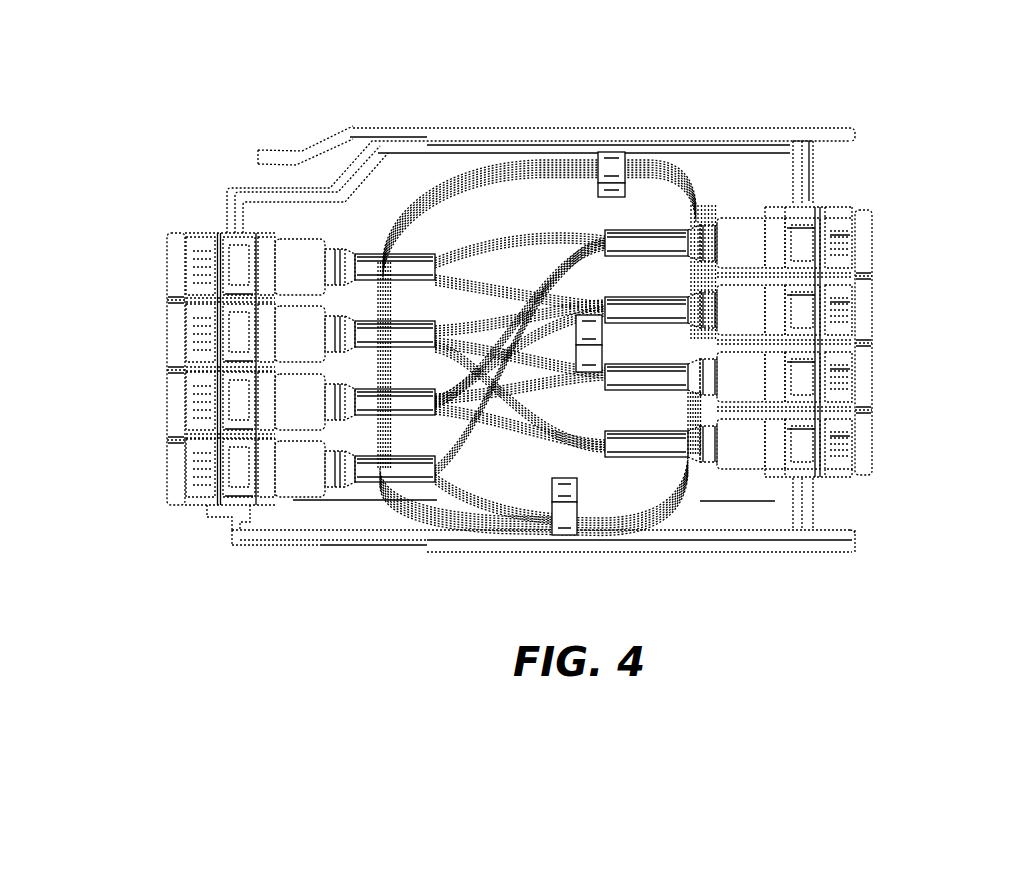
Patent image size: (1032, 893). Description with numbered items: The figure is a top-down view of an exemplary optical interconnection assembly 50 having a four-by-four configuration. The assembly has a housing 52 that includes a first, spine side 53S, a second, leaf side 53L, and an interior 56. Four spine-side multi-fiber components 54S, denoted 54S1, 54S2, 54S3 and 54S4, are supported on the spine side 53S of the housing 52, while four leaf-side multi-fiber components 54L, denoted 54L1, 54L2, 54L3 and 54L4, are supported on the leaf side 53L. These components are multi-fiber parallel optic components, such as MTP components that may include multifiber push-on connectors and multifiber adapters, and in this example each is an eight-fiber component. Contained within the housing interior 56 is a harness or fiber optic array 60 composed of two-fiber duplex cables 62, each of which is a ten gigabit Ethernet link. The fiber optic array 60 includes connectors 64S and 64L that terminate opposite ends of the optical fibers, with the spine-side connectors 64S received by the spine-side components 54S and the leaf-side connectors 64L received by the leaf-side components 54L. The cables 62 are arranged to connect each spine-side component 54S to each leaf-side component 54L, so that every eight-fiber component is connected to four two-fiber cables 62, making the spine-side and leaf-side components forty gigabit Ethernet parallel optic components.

The optical interconnection assembly 50 is at (526, 308).
The housing 52 is at (245, 187).
The second side (leaf side) 53L is at (230, 523).
The first side (spine side) 53S is at (815, 168).
The leaf-side MF components 54L is at (242, 306).
The first leaf-side MF component 54L1 is at (167, 265).
The second leaf-side MF component 54L2 is at (167, 334).
The third leaf-side MF component 54L3 is at (167, 402).
The fourth leaf-side MF component 54L4 is at (167, 472).
The spine-side MF components 54S is at (804, 308).
The first spine-side MF component 54S1 is at (873, 237).
The second spine-side MF component 54S2 is at (873, 305).
The third spine-side MF component 54S3 is at (873, 376).
The fourth spine-side MF component 54S4 is at (803, 444).
The housing interior 56 is at (742, 178).
The fiber optic array (harness) 60 is at (440, 172).
The two-fiber (2f) cables 62 is at (697, 185).
The leaf-side connectors 64L is at (334, 502).
The spine-side connectors 64S is at (702, 474).